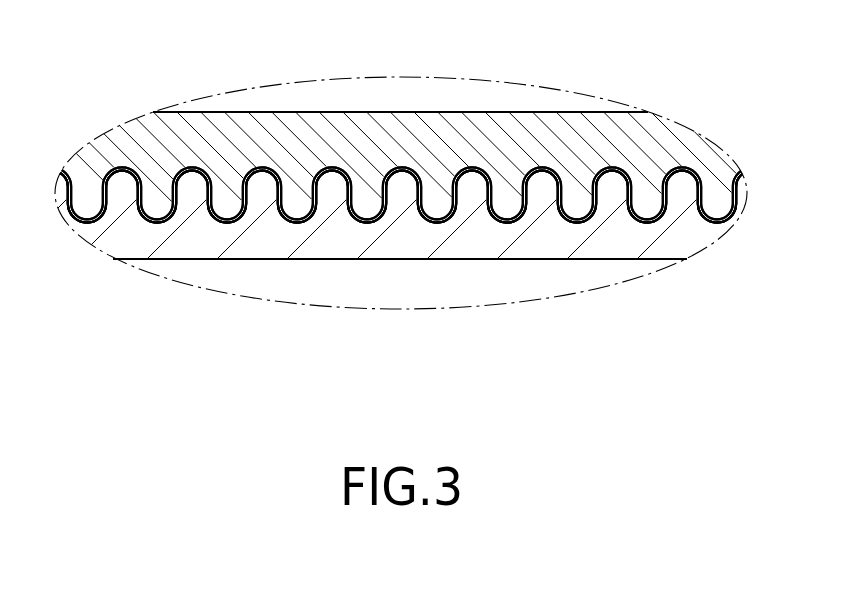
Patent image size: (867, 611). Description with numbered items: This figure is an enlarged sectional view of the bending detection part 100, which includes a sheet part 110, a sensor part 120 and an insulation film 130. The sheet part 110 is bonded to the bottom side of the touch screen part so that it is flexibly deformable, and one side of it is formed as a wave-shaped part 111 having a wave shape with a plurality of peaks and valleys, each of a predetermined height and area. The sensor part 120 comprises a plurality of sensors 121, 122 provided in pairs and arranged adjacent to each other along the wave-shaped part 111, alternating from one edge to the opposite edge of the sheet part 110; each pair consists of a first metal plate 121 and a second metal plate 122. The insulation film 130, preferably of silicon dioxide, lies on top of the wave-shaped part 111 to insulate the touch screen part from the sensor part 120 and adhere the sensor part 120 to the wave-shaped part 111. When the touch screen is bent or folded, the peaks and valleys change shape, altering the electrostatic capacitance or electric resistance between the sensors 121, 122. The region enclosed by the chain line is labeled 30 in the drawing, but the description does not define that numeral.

The bending detection part 100 is at (173, 82).
The housing 30 is at (478, 98).
The insulation film 130 is at (558, 137).
The sheet part 110 is at (396, 243).
The wave-shaped part 111 is at (630, 226).
The sensor part 120 is at (305, 371).
The first metal plate 121 is at (157, 224).
The second metal plate 122 is at (294, 225).